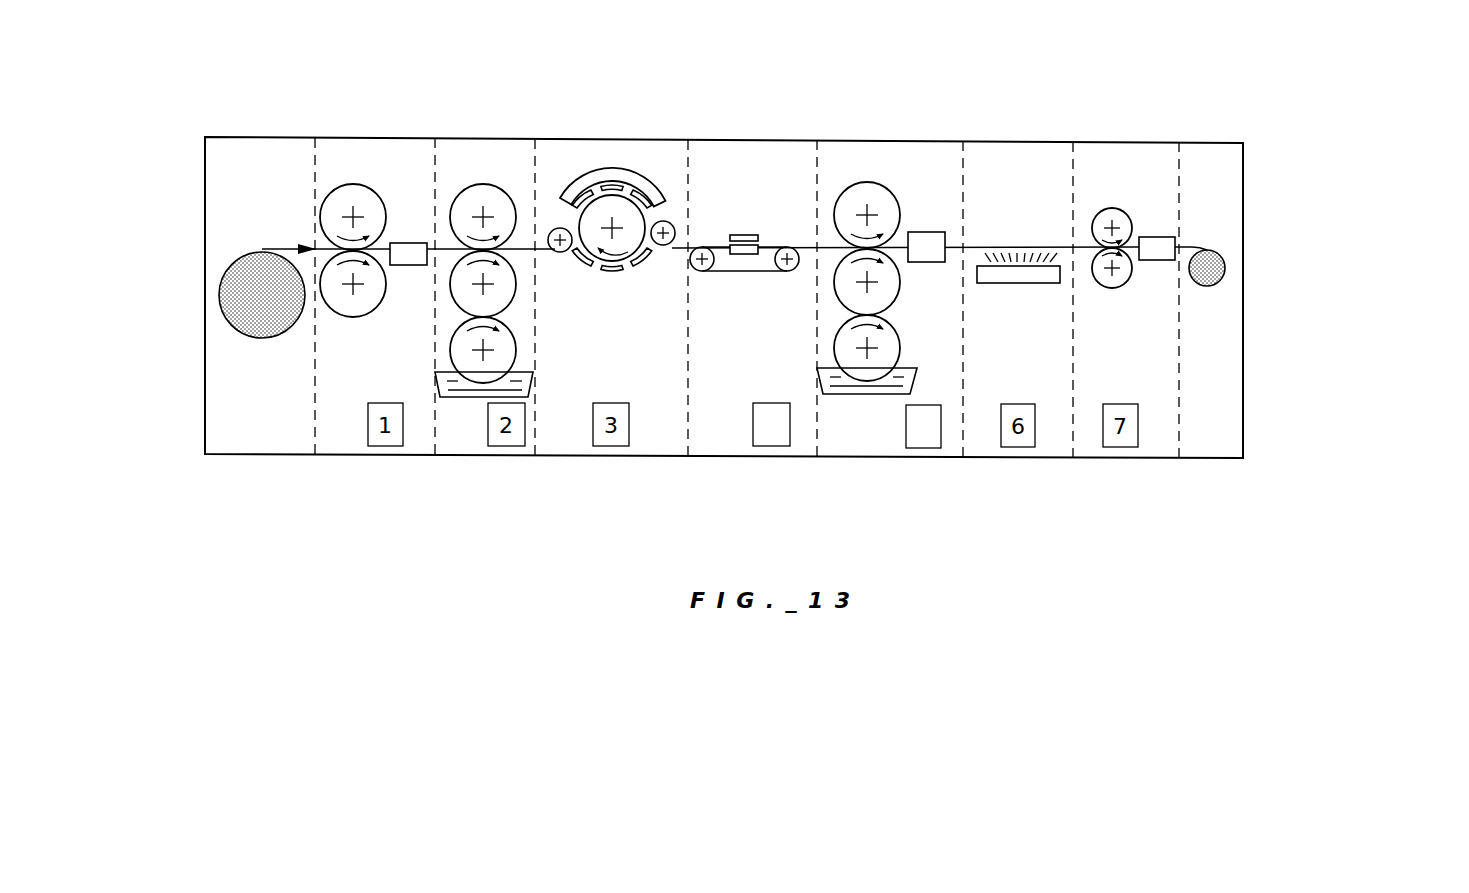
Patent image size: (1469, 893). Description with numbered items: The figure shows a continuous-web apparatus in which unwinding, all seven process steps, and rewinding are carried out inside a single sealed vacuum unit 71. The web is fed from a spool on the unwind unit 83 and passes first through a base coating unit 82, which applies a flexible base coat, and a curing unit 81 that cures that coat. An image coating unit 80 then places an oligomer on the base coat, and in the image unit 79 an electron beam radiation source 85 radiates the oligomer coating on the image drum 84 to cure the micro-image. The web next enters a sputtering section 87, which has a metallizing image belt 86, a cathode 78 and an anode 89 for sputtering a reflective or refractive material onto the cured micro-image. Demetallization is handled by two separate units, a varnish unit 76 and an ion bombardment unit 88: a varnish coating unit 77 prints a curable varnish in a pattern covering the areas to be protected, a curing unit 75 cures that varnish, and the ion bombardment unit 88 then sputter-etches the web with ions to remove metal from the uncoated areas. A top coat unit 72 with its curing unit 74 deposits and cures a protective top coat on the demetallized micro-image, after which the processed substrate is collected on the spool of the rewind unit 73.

The sealed vacuum unit 71 is at (782, 139).
The top coat unit 72 is at (1145, 163).
The rewind unit 73 is at (1218, 190).
The curing unit 74 is at (937, 262).
The curing unit 75 is at (1155, 260).
The varnish unit 76 is at (933, 446).
The varnish coating unit 77 is at (898, 386).
The cathode 78 is at (743, 257).
The image unit 79 is at (665, 430).
The image coating unit 80 is at (448, 390).
The curing unit 81 is at (417, 265).
The base coating unit 82 is at (338, 314).
The unwind unit 83 is at (239, 250).
The image drum 84 is at (588, 223).
The electron beam radiation source 85 is at (650, 186).
The metallizing image belt 86 is at (722, 246).
The sputtering section 87 is at (698, 438).
The ion bombardment unit 88 is at (1017, 250).
The anode 89 is at (748, 235).